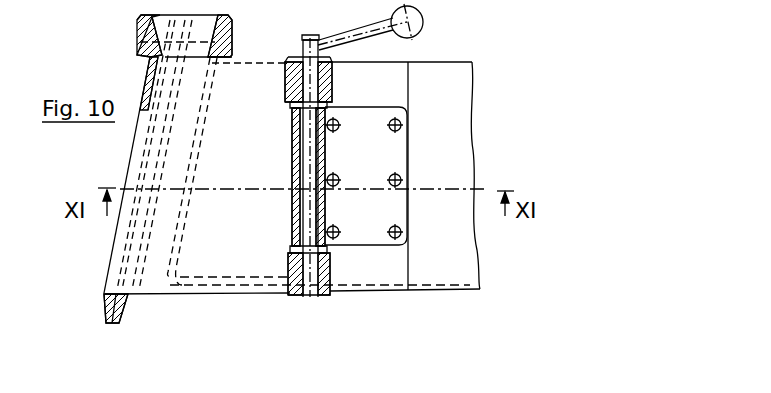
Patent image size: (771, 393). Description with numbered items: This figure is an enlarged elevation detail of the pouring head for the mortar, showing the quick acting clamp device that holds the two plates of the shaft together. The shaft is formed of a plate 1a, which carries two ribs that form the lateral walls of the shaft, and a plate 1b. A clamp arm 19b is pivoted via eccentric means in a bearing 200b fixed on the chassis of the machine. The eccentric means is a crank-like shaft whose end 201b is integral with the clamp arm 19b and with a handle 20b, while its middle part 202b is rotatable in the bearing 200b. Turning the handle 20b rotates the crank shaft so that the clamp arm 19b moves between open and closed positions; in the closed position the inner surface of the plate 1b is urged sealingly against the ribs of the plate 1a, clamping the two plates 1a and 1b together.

The plate 1a is at (128, 318).
The plate 1b is at (105, 297).
The clamp arm 19b is at (208, 292).
The handle 20b is at (422, 20).
The bearing 200b is at (381, 237).
The end of crank shaft 201b is at (318, 265).
The middle part of crank shaft 202b is at (305, 223).